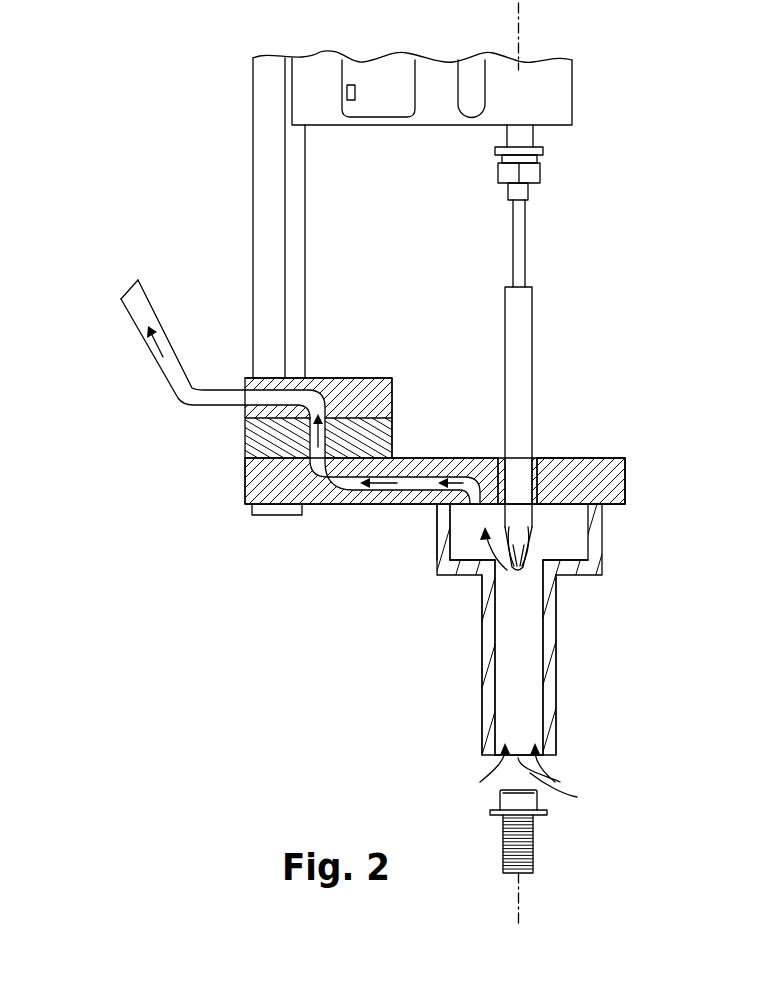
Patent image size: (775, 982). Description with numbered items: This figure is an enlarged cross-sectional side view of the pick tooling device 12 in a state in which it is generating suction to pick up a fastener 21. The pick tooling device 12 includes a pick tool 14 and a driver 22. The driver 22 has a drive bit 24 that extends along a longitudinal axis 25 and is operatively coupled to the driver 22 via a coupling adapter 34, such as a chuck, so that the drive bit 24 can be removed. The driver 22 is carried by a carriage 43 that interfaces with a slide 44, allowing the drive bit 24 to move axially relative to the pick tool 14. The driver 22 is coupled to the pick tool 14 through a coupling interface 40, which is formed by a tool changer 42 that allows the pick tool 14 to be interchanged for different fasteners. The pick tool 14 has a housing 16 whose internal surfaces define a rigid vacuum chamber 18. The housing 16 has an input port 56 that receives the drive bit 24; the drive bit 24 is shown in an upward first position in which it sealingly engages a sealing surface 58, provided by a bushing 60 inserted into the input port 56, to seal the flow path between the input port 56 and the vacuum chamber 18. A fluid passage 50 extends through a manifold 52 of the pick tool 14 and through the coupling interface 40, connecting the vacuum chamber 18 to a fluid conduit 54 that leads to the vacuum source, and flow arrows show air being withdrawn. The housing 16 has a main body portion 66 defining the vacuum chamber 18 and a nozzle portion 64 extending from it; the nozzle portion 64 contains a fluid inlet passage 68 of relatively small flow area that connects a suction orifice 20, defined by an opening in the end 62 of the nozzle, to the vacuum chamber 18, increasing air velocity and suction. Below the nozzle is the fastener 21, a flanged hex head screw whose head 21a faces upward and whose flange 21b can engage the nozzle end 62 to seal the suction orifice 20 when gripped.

The pick tooling device 12 is at (247, 102).
The pick tool 14 is at (621, 451).
The housing 16 is at (603, 575).
The vacuum chamber 18 is at (573, 537).
The suction orifice 20 is at (537, 792).
The fastener 21 is at (532, 843).
The head side 21a is at (510, 795).
The flange 21b is at (497, 813).
The driver 22 is at (608, 128).
The drive bit 24 is at (532, 352).
The longitudinal axis 25 is at (518, 20).
The coupling adapter 34 is at (527, 188).
The coupling interface 40 is at (272, 422).
The tool changer 42 is at (198, 425).
The carriage 43 is at (432, 105).
The slide 44 is at (305, 250).
The fluid passage 50 is at (343, 480).
The manifold 52 is at (405, 505).
The fluid conduit 54 is at (168, 338).
The input port 56 is at (536, 453).
The sealing surface 58 is at (532, 472).
The bushing 60 is at (544, 478).
The end 62 is at (555, 761).
The nozzle portion 64 is at (482, 658).
The main body portion 66 is at (437, 563).
The fluid inlet passage 68 is at (523, 687).